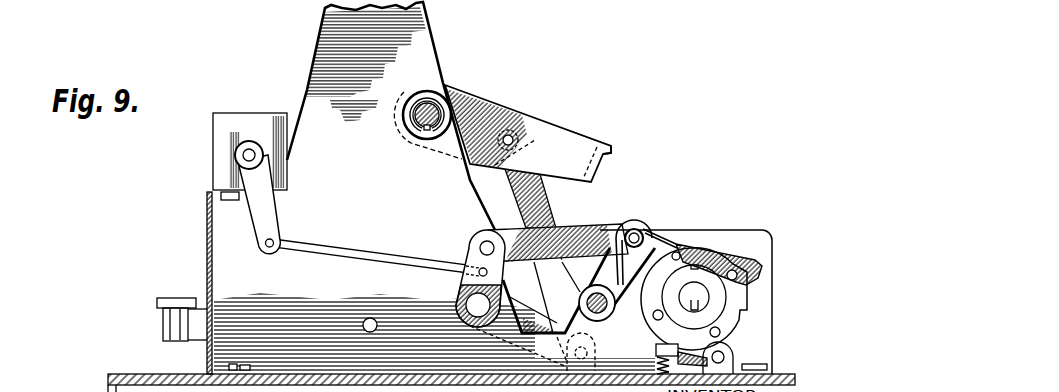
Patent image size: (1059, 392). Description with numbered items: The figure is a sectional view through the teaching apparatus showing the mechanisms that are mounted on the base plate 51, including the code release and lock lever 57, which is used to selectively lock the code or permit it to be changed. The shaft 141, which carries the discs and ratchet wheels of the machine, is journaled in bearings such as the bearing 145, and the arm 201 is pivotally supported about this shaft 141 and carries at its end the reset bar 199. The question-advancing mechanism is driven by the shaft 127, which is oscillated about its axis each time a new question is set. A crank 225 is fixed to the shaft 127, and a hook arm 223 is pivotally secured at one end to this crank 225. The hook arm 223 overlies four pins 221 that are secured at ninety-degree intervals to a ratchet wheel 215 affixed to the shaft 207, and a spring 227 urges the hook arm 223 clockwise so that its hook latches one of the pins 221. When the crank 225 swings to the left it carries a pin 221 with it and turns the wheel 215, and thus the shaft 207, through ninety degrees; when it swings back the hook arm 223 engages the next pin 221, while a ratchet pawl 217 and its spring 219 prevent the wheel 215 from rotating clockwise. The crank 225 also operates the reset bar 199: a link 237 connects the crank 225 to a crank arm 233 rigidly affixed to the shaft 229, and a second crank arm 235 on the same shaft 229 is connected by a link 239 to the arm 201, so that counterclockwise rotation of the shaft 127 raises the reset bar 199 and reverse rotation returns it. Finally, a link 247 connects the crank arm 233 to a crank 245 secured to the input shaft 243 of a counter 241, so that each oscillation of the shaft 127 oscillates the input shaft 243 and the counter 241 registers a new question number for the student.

The base plate 51 is at (117, 374).
The code release and lock lever 57 is at (165, 297).
The shaft 127 is at (605, 312).
The shaft 141 is at (425, 97).
The bearing 145 is at (441, 98).
The reset bar 199 is at (600, 146).
The arm 201 is at (507, 104).
The shaft 207 is at (706, 306).
The ratchet wheel 215 is at (727, 330).
The ratchet pawl 217 is at (656, 347).
The spring 219 is at (656, 363).
The pins 221 is at (691, 220).
The hook arm 223 is at (728, 247).
The crank 225 is at (611, 229).
The spring 227 is at (672, 230).
The shaft 229 is at (468, 318).
The crank arm 233 is at (470, 247).
The crank arm 235 is at (537, 309).
The link 237 is at (591, 222).
The link 239 is at (549, 190).
The counter 241 is at (220, 113).
The input shaft 243 is at (251, 141).
The crank 245 is at (277, 214).
The link 247 is at (285, 256).